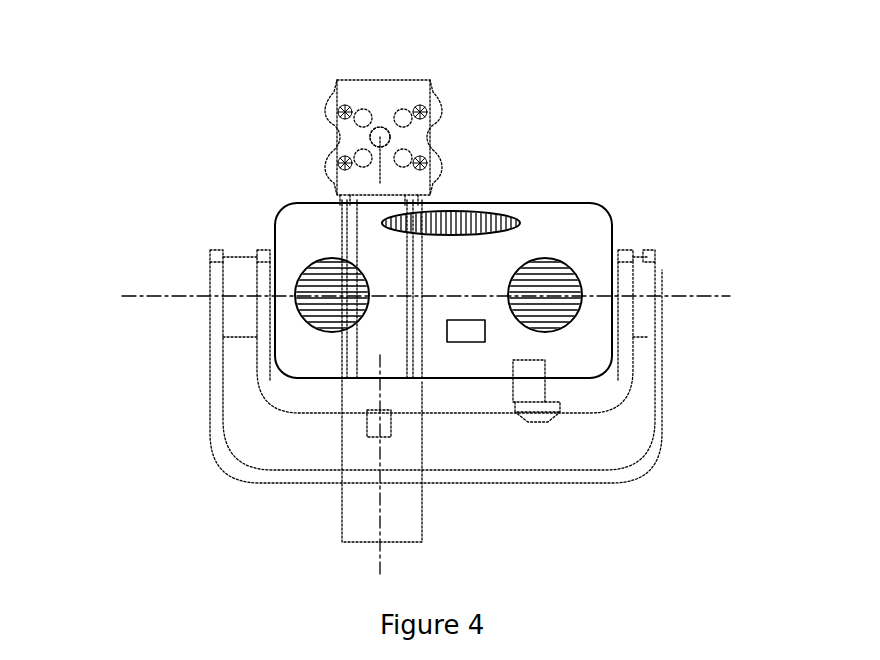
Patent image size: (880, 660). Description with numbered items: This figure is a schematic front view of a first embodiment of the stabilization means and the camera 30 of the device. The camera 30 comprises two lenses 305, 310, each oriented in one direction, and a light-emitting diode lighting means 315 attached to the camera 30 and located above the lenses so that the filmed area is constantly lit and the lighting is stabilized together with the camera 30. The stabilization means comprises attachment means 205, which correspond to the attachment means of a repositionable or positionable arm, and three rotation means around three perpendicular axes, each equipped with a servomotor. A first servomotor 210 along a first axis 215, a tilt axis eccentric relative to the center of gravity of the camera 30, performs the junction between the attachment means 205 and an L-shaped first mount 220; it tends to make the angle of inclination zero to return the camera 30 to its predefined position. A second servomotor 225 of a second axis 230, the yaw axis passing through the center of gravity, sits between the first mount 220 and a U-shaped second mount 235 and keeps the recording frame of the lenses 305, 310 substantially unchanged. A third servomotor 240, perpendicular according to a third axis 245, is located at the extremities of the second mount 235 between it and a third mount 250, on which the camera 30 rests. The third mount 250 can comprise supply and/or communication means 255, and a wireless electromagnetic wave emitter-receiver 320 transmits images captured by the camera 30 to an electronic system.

The camera 30 is at (585, 215).
The attachment means 205 is at (353, 85).
The first servomotor 210 is at (376, 78).
The first axis 215 is at (380, 137).
The first mount 220 is at (360, 217).
The second servomotor 225 is at (408, 505).
The second axis 230 is at (378, 561).
The second mount 235 is at (620, 464).
The third servomotor 240 is at (232, 320).
The third axis 245 is at (130, 296).
The third mount 250 is at (610, 385).
The supply and/or communication means 255 is at (532, 387).
The lens 305 is at (545, 268).
The lens 310 is at (340, 282).
The light-emitting diode lighting means 315 is at (470, 213).
The wireless electromagnetic wave emitter-receiver 320 is at (460, 342).